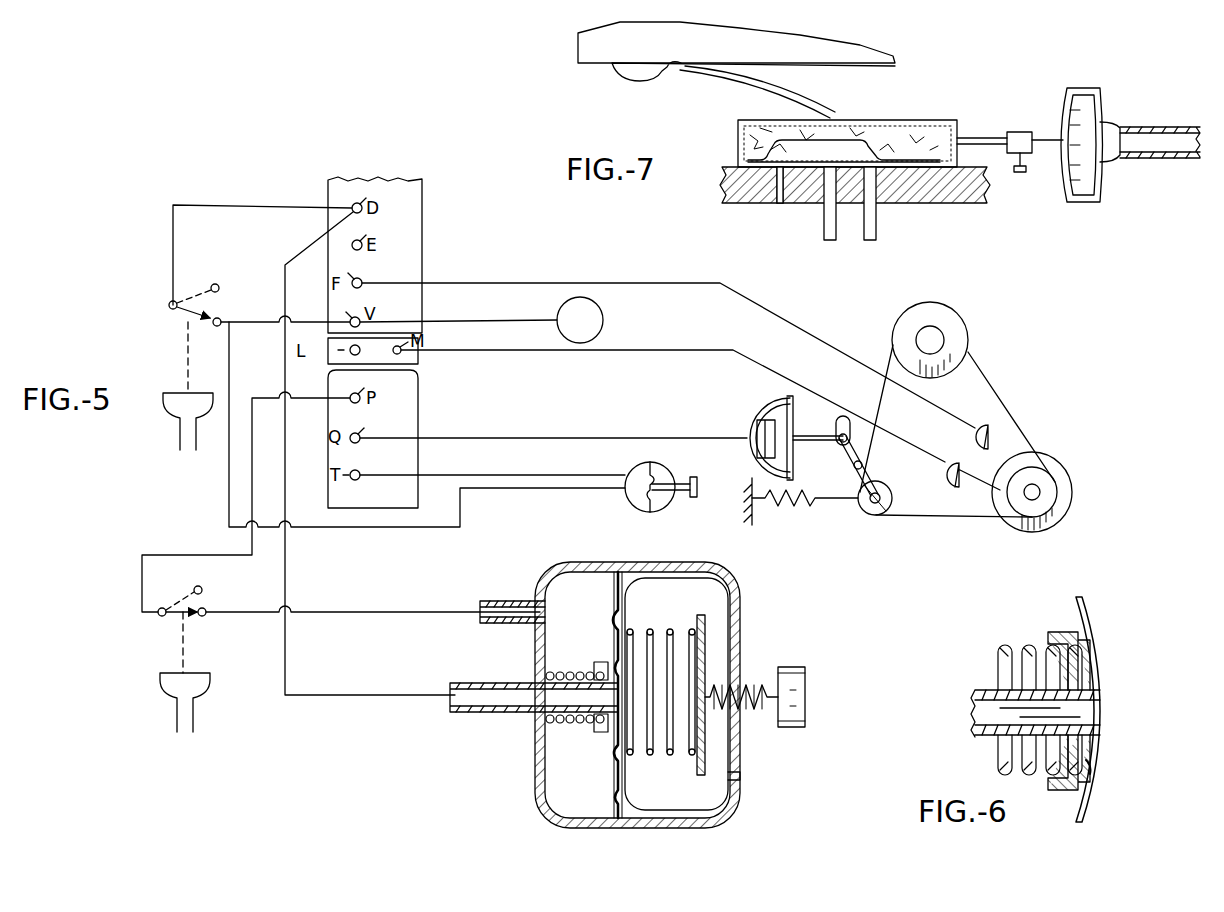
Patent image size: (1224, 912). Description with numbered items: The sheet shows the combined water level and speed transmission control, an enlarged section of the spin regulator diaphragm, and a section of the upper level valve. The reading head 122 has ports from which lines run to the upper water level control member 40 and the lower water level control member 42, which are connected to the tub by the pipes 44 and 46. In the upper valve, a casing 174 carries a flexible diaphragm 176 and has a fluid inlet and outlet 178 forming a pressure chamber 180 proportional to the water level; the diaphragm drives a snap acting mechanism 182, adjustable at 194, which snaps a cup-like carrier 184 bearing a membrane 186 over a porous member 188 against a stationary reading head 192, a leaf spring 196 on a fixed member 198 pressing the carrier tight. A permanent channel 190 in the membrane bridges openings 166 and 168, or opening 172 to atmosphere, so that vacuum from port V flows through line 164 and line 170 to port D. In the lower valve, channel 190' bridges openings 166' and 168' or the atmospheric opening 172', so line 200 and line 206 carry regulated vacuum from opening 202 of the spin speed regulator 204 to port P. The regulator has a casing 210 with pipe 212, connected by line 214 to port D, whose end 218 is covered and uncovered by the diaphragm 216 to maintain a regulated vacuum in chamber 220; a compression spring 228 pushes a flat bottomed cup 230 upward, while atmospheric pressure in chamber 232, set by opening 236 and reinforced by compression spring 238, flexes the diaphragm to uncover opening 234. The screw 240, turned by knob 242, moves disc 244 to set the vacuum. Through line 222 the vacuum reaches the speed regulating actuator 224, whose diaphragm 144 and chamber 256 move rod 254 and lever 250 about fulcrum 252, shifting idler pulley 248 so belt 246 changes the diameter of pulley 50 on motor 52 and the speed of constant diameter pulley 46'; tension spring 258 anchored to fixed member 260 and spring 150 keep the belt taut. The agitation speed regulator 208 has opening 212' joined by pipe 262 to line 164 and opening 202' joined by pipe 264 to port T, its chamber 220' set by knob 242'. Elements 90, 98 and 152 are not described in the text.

In FIG. 5, the upper water level control member 40 is at (173, 418).
In FIG. 7, the upper water level control member 40 is at (1160, 84).
In FIG. 5, the lower water level control member 42 is at (156, 620).
In FIG. 7, the pipe 44 is at (1188, 166).
In FIG. 5, the pipe 46 is at (195, 702).
In FIG. 5, the constant diameter pulley 46' is at (940, 337).
In FIG. 5, the pulley 50 is at (1040, 490).
In FIG. 5, the motor 52 is at (1074, 492).
In FIG. 5, the cup 90 is at (948, 478).
In FIG. 5, the cup 98 is at (988, 422).
In FIG. 5, the reading head 122 is at (416, 216).
In FIG. 5, the diaphragm 144 is at (812, 442).
In FIG. 5, the spring 150 is at (780, 406).
In FIG. 5, the vacuum pump 152 is at (484, 315).
In FIG. 5, the line 164 is at (237, 300).
In FIG. 7, the line 164 is at (879, 244).
In FIG. 5, the opening 166 is at (270, 349).
In FIG. 7, the opening 166 is at (910, 219).
In FIG. 5, the opening 166' is at (369, 622).
In FIG. 5, the opening 168 is at (175, 321).
In FIG. 7, the opening 168 is at (859, 214).
In FIG. 5, the opening 168' is at (177, 591).
In FIG. 5, the line 170 is at (173, 253).
In FIG. 7, the line 170 is at (824, 224).
In FIG. 5, the valve opening 172 is at (216, 286).
In FIG. 7, the valve opening 172 is at (773, 203).
In FIG. 5, the opening 172' is at (209, 589).
In FIG. 7, the casing 174 is at (1102, 200).
In FIG. 7, the flexible diaphragm 176 is at (1094, 90).
In FIG. 7, the fluid inlet and outlet 178 is at (1120, 156).
In FIG. 7, the pressure chamber 180 is at (1100, 127).
In FIG. 7, the snap acting mechanism 182 is at (1018, 132).
In FIG. 7, the carrier 184 is at (939, 120).
In FIG. 7, the membrane 186 is at (742, 146).
In FIG. 7, the porous member 188 is at (960, 180).
In FIG. 5, the channel 190 is at (168, 358).
In FIG. 7, the channel 190 is at (845, 126).
In FIG. 5, the channel 190' is at (168, 642).
In FIG. 7, the reading head 192 is at (722, 182).
In FIG. 7, the manual adjustment 194 is at (1020, 174).
In FIG. 7, the leaf spring 196 is at (810, 106).
In FIG. 7, the fixed member 198 is at (822, 65).
In FIG. 5, the line 200 is at (228, 609).
In FIG. 5, the opening 202 is at (503, 599).
In FIG. 5, the opening 202' is at (625, 483).
In FIG. 5, the spin speed regulator 204 is at (649, 682).
In FIG. 5, the line 206 is at (182, 555).
In FIG. 5, the agitation speed regulator 208 is at (674, 474).
In FIG. 5, the casing 210 is at (662, 558).
In FIG. 5, the pipe 212 is at (534, 717).
In FIG. 6, the pipe 212 is at (963, 750).
In FIG. 5, the opening 212' is at (604, 511).
In FIG. 5, the line 214 is at (286, 571).
In FIG. 5, the diaphragm 216 is at (614, 600).
In FIG. 6, the diaphragm 216 is at (1086, 610).
In FIG. 6, the end of pipe 218 is at (1100, 714).
In FIG. 5, the chamber 220 is at (514, 804).
In FIG. 5, the chamber 220' is at (636, 524).
In FIG. 5, the line 222 is at (612, 420).
In FIG. 5, the speed regulating actuator 224 is at (746, 436).
In FIG. 5, the compression spring 228 is at (570, 722).
In FIG. 6, the compression spring 228 is at (996, 767).
In FIG. 6, the flat bottomed cup 230 is at (1100, 658).
In FIG. 5, the chamber 232 is at (704, 794).
In FIG. 6, the opening 234 is at (1092, 766).
In FIG. 5, the opening 236 is at (742, 776).
In FIG. 5, the compression spring 238 is at (668, 752).
In FIG. 5, the screw 240 is at (750, 682).
In FIG. 5, the knob 242 is at (811, 684).
In FIG. 5, the knob 242' is at (708, 505).
In FIG. 5, the disc 244 is at (700, 740).
In FIG. 5, the belt 246 is at (990, 373).
In FIG. 5, the idler pulley 248 is at (877, 514).
In FIG. 5, the lever 250 is at (862, 434).
In FIG. 5, the fulcrum 252 is at (864, 466).
In FIG. 5, the rod 254 is at (820, 426).
In FIG. 5, the chamber 256 is at (766, 406).
In FIG. 5, the tension spring 258 is at (798, 506).
In FIG. 5, the fixed member 260 is at (758, 516).
In FIG. 5, the pipe 262 is at (546, 492).
In FIG. 5, the pipe 264 is at (462, 473).